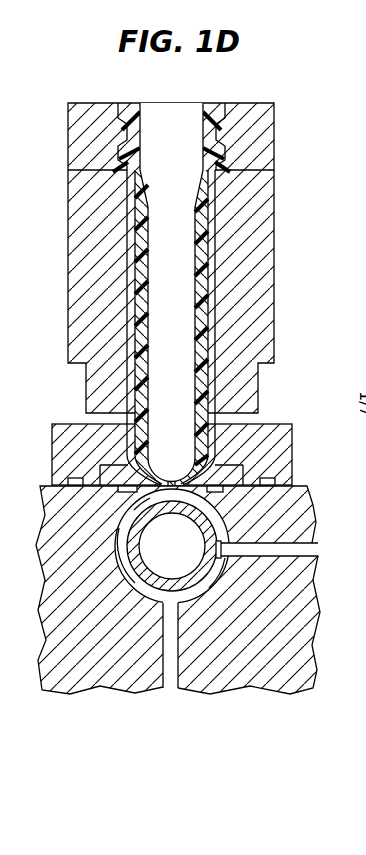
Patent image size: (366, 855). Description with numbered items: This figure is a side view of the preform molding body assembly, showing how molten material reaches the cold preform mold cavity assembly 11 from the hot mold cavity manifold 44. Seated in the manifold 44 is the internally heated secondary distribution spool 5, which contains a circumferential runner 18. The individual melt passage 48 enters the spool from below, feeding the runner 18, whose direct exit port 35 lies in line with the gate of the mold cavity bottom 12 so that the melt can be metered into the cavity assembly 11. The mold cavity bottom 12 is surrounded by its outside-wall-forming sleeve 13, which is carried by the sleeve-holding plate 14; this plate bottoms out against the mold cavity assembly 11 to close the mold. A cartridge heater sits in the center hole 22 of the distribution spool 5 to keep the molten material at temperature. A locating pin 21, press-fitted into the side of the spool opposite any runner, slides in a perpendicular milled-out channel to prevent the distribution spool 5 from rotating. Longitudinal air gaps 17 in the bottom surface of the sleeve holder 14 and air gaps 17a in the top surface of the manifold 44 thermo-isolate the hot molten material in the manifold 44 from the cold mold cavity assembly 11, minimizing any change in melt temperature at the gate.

The distribution spool 5 is at (206, 598).
The mold cavity assembly 11 is at (264, 320).
The mold cavity bottom 12 is at (167, 478).
The outside-wall-forming sleeve 13 is at (220, 470).
The sleeve-holding plate 14 is at (62, 478).
The thermo-insulating air gaps 17 is at (118, 491).
The longitudinal air gaps 17a is at (140, 503).
The circumferential runner 18 is at (133, 590).
The locating pin 21 is at (306, 550).
The center hole 22 is at (183, 559).
The exit port 35 is at (212, 506).
The mold cavity manifold 44 is at (284, 690).
The melt passage 48 is at (170, 690).